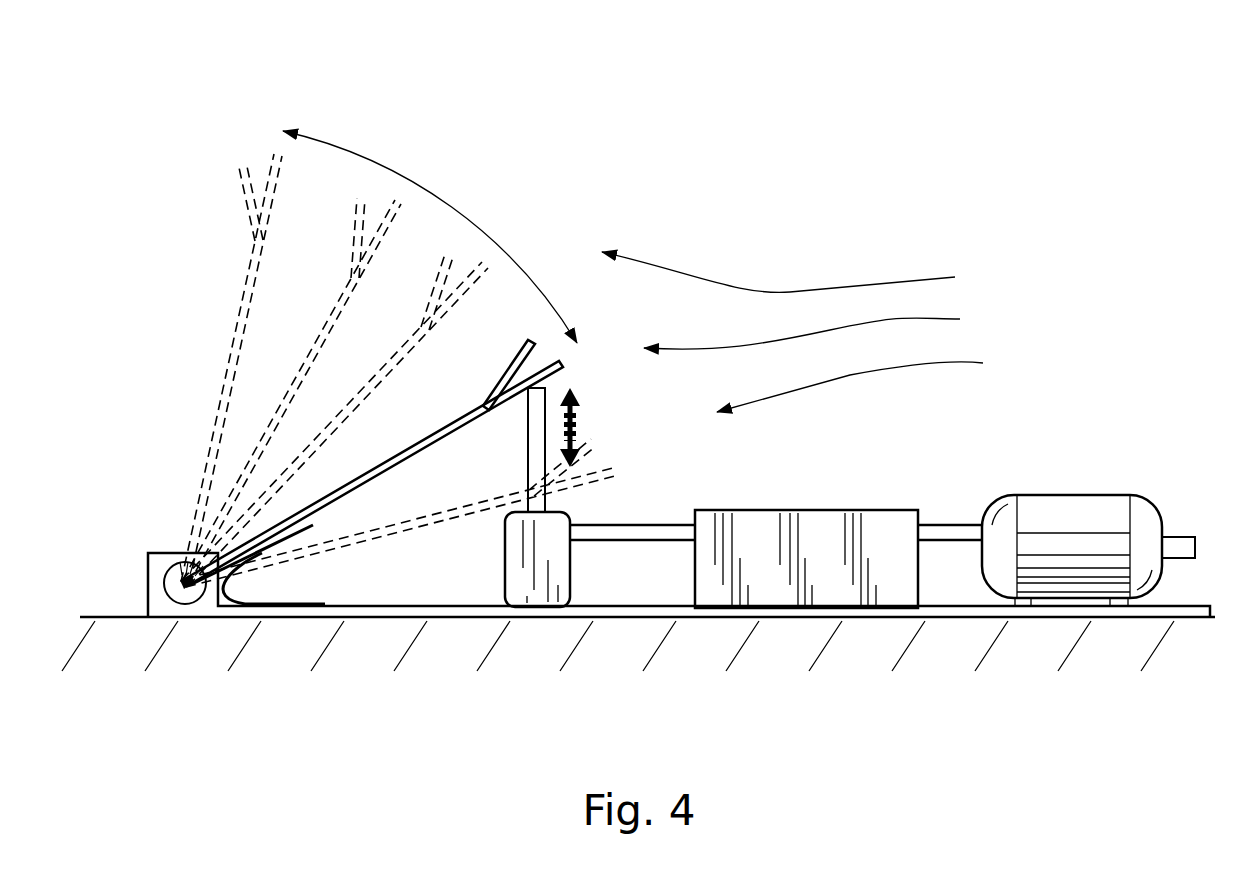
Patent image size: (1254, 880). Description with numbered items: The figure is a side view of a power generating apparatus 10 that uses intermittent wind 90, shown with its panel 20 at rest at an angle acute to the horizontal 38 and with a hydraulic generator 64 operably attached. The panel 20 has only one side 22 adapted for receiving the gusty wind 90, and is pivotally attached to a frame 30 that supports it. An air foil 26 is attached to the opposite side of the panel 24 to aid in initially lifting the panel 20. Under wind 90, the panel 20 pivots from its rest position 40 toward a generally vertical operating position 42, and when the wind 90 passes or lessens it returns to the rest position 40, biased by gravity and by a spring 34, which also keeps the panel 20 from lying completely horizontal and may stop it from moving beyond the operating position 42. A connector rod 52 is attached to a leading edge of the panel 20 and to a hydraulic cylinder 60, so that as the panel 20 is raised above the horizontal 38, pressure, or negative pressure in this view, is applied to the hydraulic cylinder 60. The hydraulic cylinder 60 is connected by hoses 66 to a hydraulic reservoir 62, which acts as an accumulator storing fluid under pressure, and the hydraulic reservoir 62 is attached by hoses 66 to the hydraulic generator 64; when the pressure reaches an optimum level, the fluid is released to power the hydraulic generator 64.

The power generating apparatus 10 is at (183, 125).
The panel 20 is at (335, 500).
The side of the panel 22 is at (437, 441).
The side of the panel opposite the wind-receiving side 24 is at (472, 402).
The air foil 26 is at (530, 336).
The frame 30 is at (612, 612).
The spring 34 is at (235, 610).
The horizontal 38 is at (1221, 622).
The rest position 40 is at (614, 475).
The vertical position 42 is at (220, 292).
The connector rod 52 is at (578, 386).
The hydraulic cylinder 60 is at (527, 607).
The hydraulic reservoir 62 is at (786, 592).
The hydraulic generator 64 is at (1057, 570).
The hoses 66 is at (660, 541).
The wind 90 is at (918, 275).